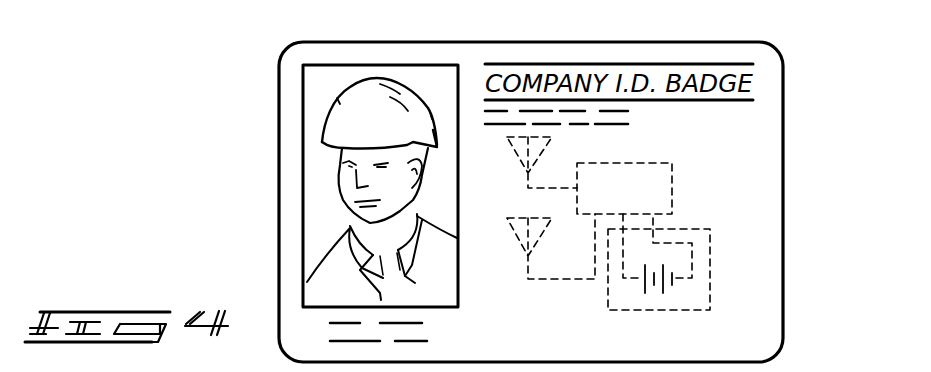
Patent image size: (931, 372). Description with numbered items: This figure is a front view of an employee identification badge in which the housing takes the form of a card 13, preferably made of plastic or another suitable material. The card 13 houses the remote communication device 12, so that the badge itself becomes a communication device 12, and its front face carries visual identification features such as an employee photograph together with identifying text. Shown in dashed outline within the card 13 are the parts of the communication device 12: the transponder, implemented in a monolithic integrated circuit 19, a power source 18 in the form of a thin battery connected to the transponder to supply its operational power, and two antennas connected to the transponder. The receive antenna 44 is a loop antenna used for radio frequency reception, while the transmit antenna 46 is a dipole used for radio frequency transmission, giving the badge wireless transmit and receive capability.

The remote communication device 12 is at (745, 175).
The card 13 is at (278, 120).
The power source 18 is at (710, 268).
The integrated circuit 19 is at (672, 187).
The receive antenna 44 is at (512, 148).
The transmit antenna 46 is at (512, 233).